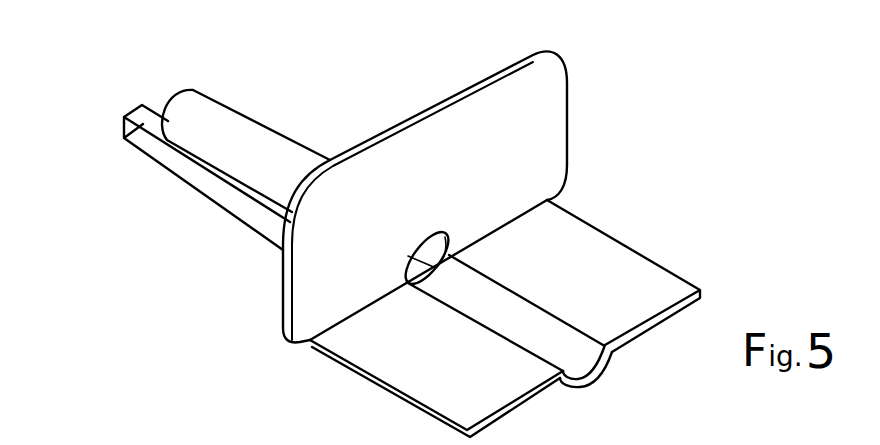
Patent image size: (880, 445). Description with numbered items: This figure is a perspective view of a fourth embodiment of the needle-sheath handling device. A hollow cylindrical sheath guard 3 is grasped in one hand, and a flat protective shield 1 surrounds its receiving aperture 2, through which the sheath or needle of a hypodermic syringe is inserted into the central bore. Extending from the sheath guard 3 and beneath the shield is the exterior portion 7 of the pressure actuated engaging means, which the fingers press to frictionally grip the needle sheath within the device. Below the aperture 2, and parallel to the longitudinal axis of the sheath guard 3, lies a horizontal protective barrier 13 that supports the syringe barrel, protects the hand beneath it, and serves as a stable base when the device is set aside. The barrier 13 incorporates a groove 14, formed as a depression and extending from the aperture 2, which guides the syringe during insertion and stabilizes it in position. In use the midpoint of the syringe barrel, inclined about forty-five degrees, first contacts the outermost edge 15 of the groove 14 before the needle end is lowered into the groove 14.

The protective shield 1 is at (537, 82).
The receiving aperture 2 is at (432, 244).
The hollow cylindrical sheath guard 3 is at (213, 115).
The exterior portion of the pressure actuated means 7 is at (157, 163).
The horizontal protective barrier 13 is at (618, 282).
The groove 14 is at (520, 317).
The edge of the groove 15 is at (605, 375).